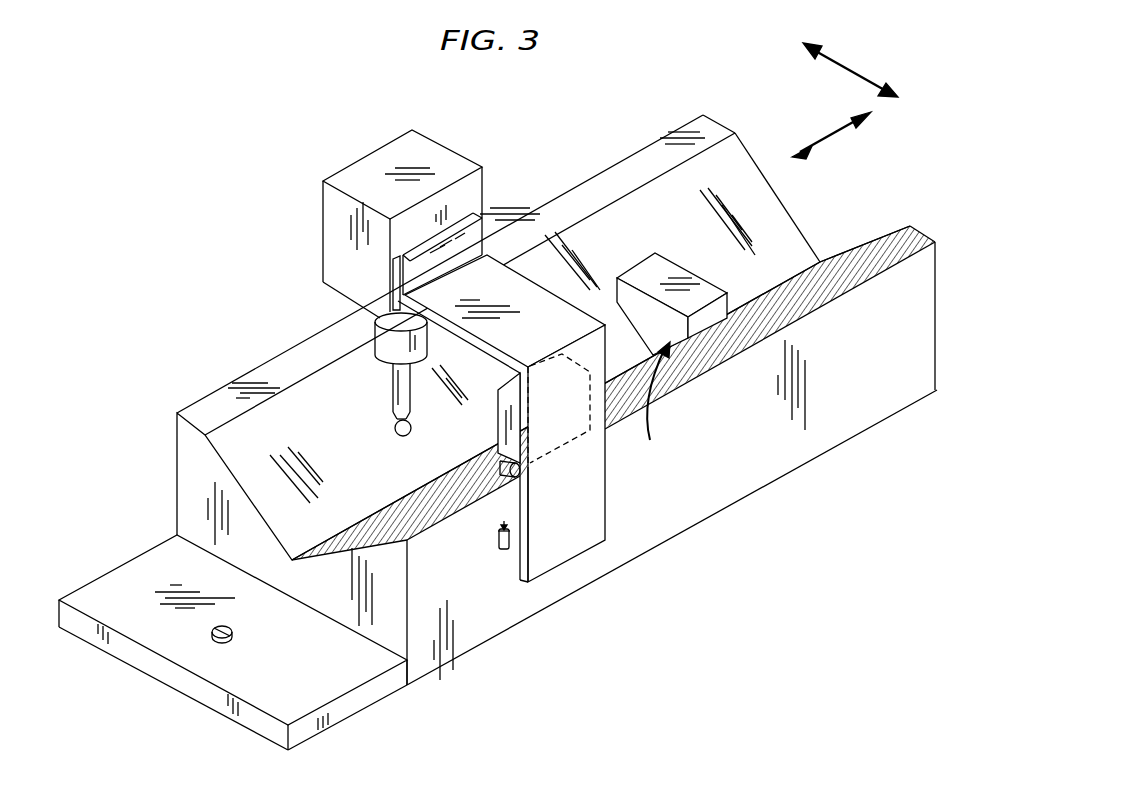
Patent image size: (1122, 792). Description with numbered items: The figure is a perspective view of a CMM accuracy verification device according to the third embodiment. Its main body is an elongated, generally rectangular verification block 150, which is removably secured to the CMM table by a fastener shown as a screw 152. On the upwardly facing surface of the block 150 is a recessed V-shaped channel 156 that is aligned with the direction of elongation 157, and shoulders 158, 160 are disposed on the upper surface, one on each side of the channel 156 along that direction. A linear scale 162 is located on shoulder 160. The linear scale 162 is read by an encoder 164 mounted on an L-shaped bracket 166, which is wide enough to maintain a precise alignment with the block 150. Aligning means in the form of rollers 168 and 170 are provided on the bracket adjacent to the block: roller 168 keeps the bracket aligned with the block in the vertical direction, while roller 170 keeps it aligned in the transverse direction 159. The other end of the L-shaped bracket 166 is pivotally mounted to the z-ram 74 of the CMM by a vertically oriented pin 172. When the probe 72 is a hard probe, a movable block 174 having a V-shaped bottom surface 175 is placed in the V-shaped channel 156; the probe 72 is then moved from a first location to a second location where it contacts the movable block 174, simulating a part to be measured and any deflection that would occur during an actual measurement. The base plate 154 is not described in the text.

The probe 72 is at (396, 428).
The z-ram 74 is at (332, 226).
The verification block 150 is at (600, 172).
The screw 152 is at (232, 634).
The base plate 154 is at (333, 676).
The V-shaped channel 156 is at (796, 218).
The shoulder 158 is at (716, 118).
The shoulder 160 is at (920, 232).
The linear scale 162 is at (845, 290).
The encoder 164 is at (498, 416).
The L-shaped bracket 166 is at (565, 548).
The roller 168 is at (517, 470).
The roller 170 is at (498, 550).
The pin 172 is at (390, 268).
The movable block 174 is at (677, 334).
The V-shaped bottom surface 175 is at (657, 404).
The direction of elongation 157 is at (830, 134).
The transverse direction 159 is at (852, 66).